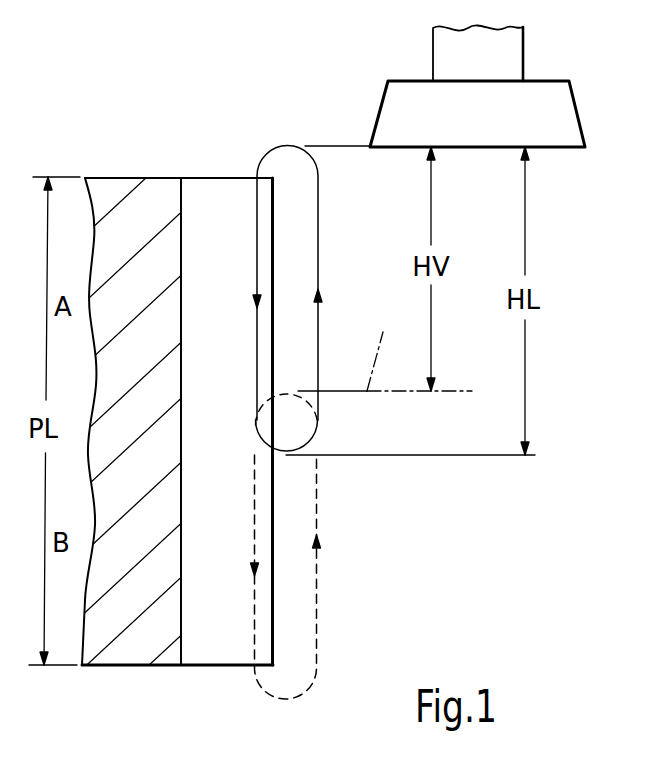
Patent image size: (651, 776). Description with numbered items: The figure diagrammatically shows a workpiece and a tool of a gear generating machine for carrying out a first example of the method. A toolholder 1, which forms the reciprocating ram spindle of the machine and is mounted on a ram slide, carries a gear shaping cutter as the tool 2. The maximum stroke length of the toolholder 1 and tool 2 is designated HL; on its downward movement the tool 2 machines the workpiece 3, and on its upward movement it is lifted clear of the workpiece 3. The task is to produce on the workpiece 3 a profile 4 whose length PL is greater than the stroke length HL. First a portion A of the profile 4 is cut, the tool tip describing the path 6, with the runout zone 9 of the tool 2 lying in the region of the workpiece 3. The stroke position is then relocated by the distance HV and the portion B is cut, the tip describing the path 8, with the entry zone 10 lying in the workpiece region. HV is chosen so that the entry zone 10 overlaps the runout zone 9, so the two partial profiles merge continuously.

The toolholder 1 is at (502, 58).
The tool 2 is at (557, 134).
The workpiece 3 is at (126, 648).
The profile 4 is at (236, 655).
The path 6 is at (319, 226).
The path 8 is at (316, 626).
The runout zone 9 is at (288, 456).
The entry zone 10 is at (255, 410).